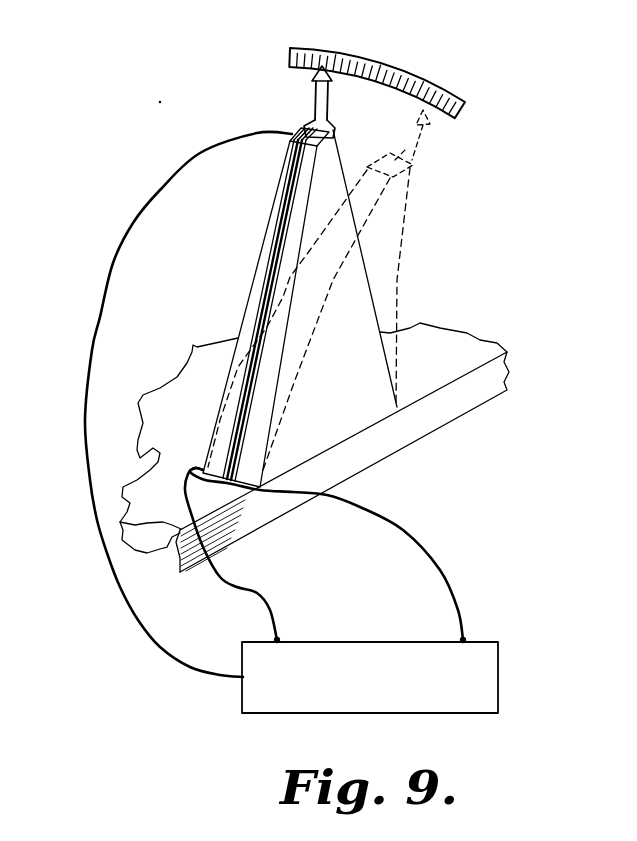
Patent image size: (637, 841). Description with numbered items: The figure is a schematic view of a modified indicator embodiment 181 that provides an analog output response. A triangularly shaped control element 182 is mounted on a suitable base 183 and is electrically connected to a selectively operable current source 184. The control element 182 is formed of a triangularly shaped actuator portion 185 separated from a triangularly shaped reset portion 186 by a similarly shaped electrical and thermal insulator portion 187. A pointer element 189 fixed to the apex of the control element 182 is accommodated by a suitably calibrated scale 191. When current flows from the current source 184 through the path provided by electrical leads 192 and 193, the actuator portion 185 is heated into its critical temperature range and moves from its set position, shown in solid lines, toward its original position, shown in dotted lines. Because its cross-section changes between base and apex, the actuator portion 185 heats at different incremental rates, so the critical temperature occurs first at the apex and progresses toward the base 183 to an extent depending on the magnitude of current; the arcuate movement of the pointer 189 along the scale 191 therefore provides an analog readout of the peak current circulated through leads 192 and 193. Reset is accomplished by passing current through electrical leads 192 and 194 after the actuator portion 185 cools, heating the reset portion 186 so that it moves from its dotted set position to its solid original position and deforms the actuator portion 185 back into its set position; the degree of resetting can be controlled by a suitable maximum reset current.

The indicator embodiment 181 is at (146, 90).
The control element 182 is at (239, 220).
The base 183 is at (509, 368).
The current source 184 is at (499, 680).
The actuator portion 185 is at (257, 268).
The reset portion 186 is at (372, 293).
The insulator portion 187 is at (262, 317).
The pointer element 189 is at (315, 102).
The scale 191 is at (410, 76).
The electrical lead 192 is at (91, 339).
The electrical lead 193 is at (237, 587).
The electrical lead 194 is at (404, 530).